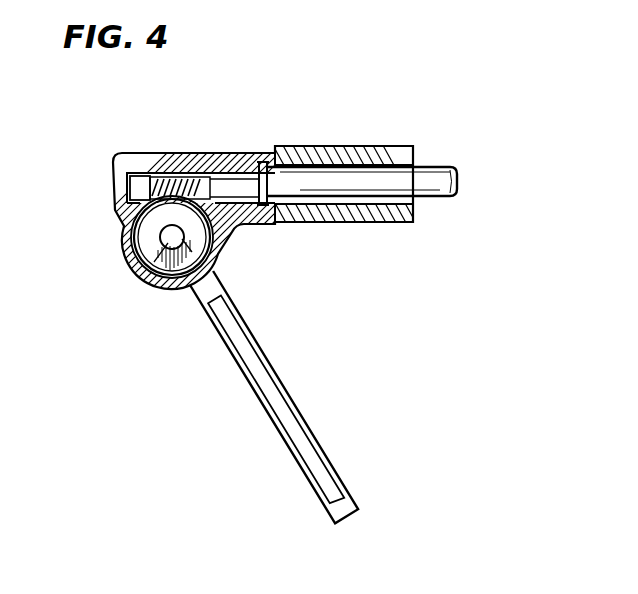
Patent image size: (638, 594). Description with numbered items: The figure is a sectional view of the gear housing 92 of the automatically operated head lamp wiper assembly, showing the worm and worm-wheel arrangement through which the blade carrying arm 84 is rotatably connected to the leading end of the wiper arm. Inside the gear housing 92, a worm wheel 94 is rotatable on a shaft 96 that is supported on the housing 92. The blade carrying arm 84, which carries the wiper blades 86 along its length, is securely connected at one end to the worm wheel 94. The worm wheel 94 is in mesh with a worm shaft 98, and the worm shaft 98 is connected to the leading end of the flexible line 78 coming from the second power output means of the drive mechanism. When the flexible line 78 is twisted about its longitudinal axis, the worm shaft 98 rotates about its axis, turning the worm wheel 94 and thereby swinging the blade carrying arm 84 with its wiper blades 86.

The flexible line 78 is at (433, 196).
The blade carrying arm 84 is at (260, 345).
The wiper blades 86 is at (280, 390).
The gear housing 92 is at (143, 153).
The worm wheel 94 is at (162, 284).
The shaft 96 is at (138, 270).
The worm shaft 98 is at (183, 160).